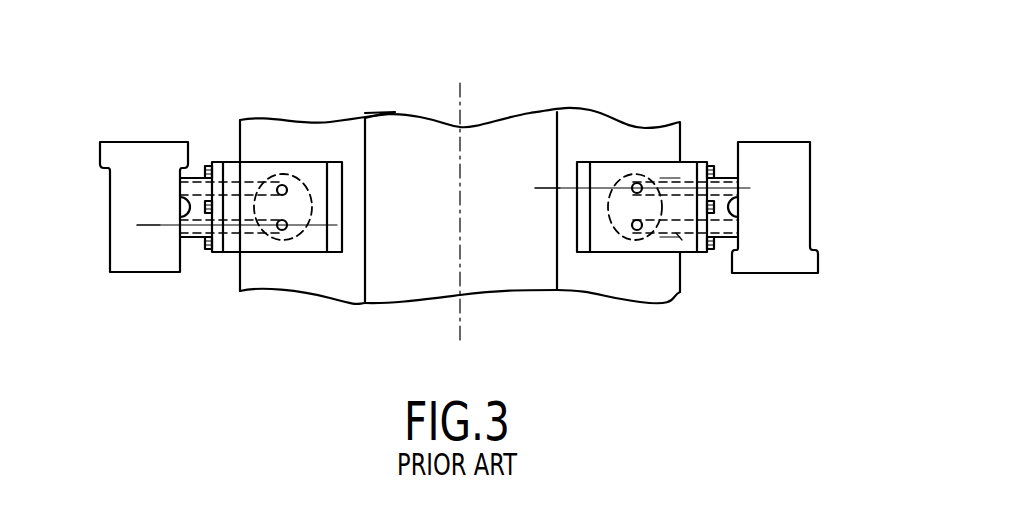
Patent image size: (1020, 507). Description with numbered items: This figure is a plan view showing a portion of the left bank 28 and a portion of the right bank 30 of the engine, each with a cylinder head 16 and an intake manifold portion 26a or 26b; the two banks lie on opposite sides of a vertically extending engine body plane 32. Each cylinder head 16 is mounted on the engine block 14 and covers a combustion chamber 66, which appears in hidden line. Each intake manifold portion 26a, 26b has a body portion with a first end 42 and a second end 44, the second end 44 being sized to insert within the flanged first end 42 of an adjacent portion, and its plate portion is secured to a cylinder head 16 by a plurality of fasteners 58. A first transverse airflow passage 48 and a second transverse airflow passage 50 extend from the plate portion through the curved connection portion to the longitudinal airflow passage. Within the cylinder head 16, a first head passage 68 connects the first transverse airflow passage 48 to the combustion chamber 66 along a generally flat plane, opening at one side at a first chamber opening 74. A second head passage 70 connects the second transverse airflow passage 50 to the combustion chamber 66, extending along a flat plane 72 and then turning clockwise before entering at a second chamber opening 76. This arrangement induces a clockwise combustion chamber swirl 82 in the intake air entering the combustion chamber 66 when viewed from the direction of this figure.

The engine block 14 is at (240, 280).
The cylinder head 16 is at (318, 242).
The intake manifold portion 26a is at (110, 212).
The intake manifold portion 26b is at (810, 195).
The left bank 28 is at (375, 267).
The right bank 30 is at (537, 160).
The engine body plane 32 is at (460, 98).
The first end 42 is at (103, 142).
The second end 44 is at (805, 142).
The first transverse airflow passage 48 is at (200, 178).
The second transverse airflow passage 50 is at (207, 243).
The fastener 58 is at (717, 164).
The combustion chamber 66 is at (292, 173).
The first head passage 68 is at (680, 235).
The second head passage 70 is at (675, 180).
The flat plane 72 is at (153, 224).
The first chamber opening 74 is at (638, 233).
The second chamber opening 76 is at (636, 185).
The clockwise combustion chamber swirl 82 is at (307, 193).